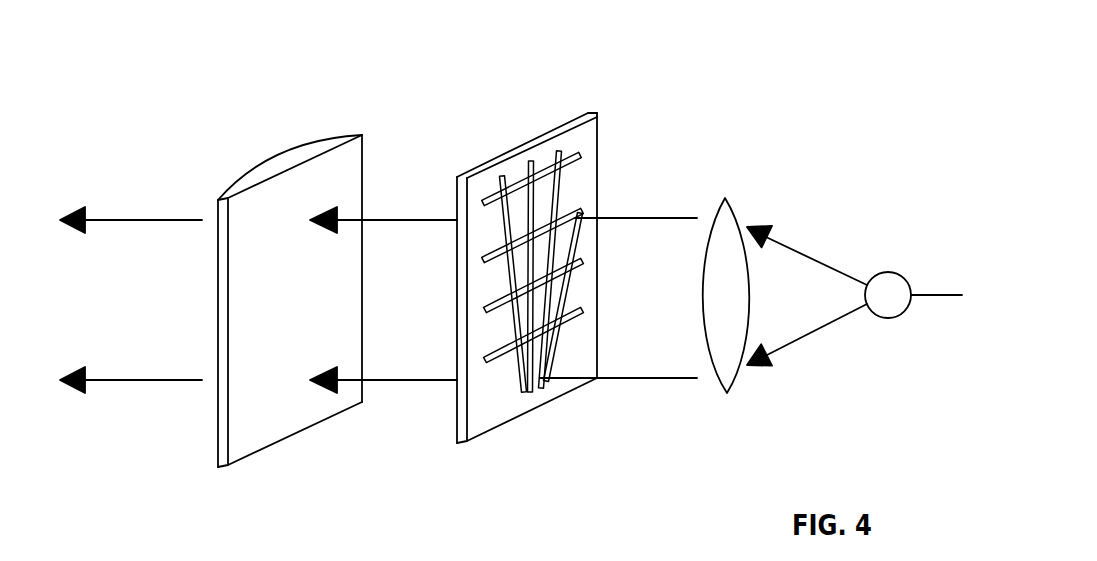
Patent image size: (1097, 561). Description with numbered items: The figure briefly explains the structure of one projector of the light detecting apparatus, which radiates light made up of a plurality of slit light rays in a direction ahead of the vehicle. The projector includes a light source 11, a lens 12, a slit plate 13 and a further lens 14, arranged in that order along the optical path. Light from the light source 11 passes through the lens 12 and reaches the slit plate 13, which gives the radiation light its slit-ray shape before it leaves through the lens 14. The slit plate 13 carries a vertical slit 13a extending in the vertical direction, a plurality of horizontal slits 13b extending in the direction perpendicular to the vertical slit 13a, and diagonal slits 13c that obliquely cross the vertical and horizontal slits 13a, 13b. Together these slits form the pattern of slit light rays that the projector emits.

The light source 11 is at (890, 272).
The lens 12 is at (730, 198).
The slit plate 13 is at (572, 113).
The vertical slit 13a is at (517, 363).
The horizontal slits 13b is at (500, 250).
The diagonal slits 13c is at (552, 308).
The lens 14 is at (268, 157).